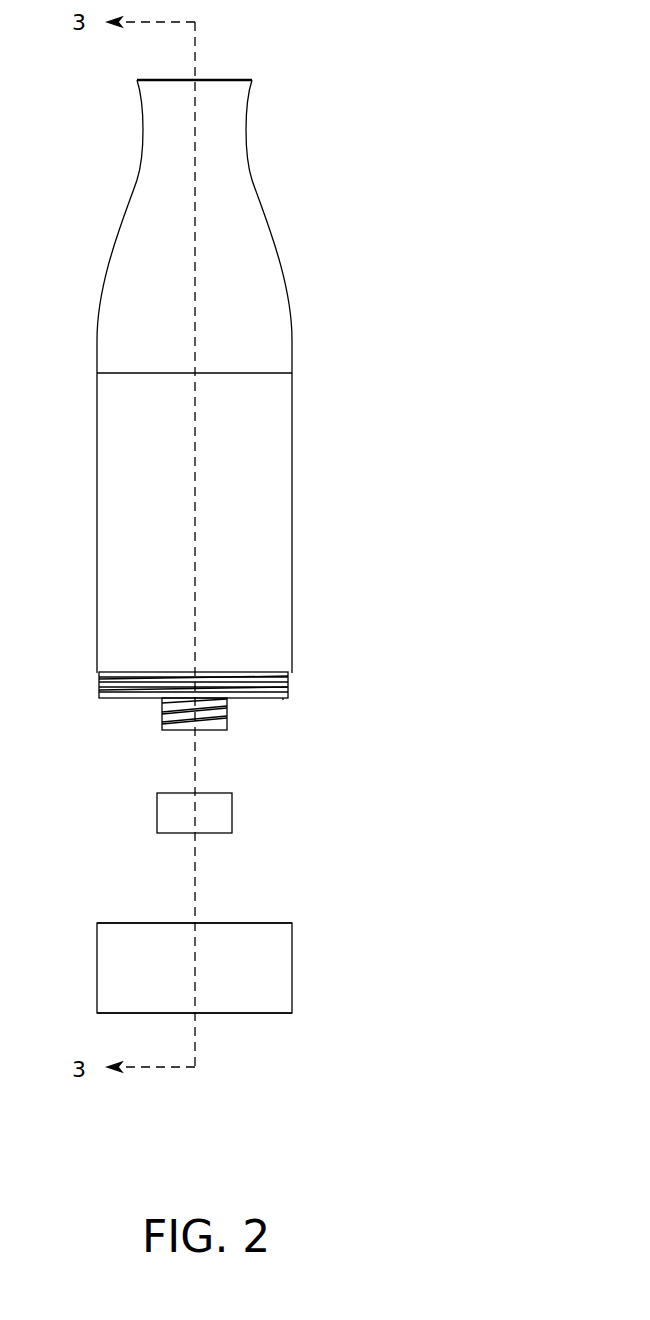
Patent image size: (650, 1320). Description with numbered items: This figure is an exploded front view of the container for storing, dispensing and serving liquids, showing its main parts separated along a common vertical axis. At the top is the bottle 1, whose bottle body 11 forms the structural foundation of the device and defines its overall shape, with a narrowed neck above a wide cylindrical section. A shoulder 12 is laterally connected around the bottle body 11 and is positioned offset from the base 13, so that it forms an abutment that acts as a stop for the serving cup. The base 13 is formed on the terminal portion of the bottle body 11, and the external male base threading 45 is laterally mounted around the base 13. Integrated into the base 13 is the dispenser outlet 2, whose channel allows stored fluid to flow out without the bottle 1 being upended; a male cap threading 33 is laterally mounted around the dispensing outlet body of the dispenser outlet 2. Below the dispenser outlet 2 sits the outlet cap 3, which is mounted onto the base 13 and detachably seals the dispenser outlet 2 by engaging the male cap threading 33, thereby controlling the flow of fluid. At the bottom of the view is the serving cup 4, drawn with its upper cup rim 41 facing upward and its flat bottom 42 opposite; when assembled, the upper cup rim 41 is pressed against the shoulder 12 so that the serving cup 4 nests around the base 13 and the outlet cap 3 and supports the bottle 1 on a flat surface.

The bottle 1 is at (248, 435).
The bottle body 11 is at (284, 477).
The shoulder 12 is at (194, 694).
The base 13 is at (288, 706).
The external male base threading 45 is at (287, 686).
The dispenser outlet 2 is at (208, 744).
The male cap threading 33 is at (162, 722).
The outlet cap 3 is at (232, 815).
The serving cup 4 is at (241, 977).
The upper cup rim 41 is at (293, 915).
The flat bottom 42 is at (277, 1022).